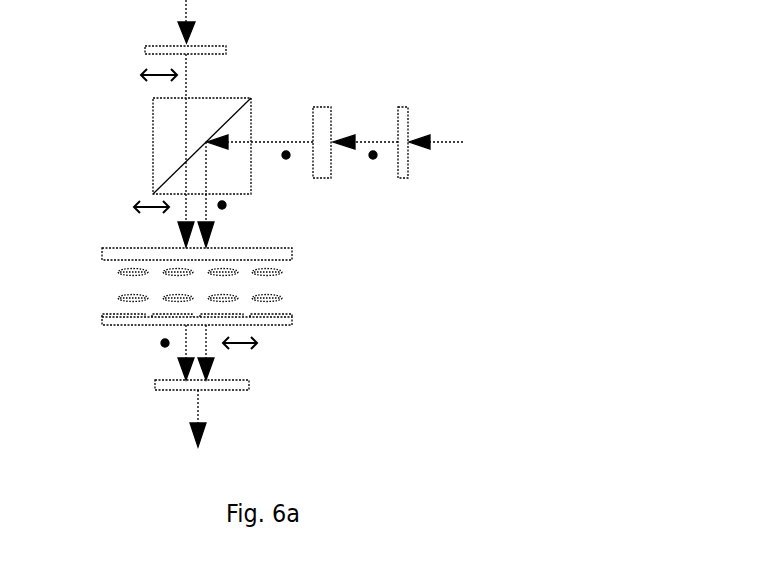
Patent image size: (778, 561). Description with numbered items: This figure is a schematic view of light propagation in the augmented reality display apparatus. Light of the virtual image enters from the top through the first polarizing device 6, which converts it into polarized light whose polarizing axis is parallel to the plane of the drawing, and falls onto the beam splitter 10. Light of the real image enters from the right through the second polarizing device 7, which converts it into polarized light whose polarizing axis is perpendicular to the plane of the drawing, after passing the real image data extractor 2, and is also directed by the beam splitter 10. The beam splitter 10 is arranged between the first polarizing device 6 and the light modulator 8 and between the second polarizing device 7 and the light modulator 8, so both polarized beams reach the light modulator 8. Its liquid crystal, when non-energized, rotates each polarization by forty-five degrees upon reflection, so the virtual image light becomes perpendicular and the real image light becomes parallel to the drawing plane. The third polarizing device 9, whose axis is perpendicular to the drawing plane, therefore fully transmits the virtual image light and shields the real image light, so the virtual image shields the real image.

The real image data extractor 2 is at (322, 107).
The first polarizing device 6 is at (145, 50).
The second polarizing device 7 is at (403, 107).
The light modulator 8 is at (112, 288).
The third polarizing device 9 is at (155, 385).
The beam splitter 10 is at (154, 152).